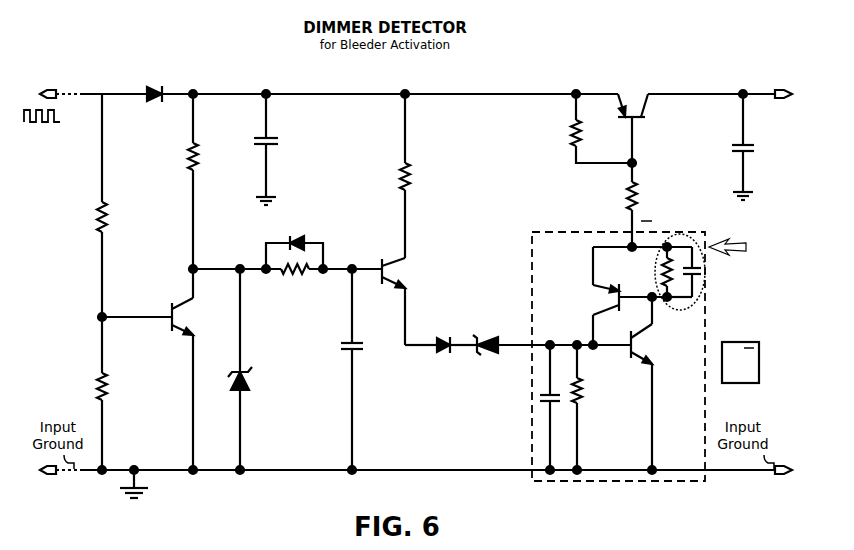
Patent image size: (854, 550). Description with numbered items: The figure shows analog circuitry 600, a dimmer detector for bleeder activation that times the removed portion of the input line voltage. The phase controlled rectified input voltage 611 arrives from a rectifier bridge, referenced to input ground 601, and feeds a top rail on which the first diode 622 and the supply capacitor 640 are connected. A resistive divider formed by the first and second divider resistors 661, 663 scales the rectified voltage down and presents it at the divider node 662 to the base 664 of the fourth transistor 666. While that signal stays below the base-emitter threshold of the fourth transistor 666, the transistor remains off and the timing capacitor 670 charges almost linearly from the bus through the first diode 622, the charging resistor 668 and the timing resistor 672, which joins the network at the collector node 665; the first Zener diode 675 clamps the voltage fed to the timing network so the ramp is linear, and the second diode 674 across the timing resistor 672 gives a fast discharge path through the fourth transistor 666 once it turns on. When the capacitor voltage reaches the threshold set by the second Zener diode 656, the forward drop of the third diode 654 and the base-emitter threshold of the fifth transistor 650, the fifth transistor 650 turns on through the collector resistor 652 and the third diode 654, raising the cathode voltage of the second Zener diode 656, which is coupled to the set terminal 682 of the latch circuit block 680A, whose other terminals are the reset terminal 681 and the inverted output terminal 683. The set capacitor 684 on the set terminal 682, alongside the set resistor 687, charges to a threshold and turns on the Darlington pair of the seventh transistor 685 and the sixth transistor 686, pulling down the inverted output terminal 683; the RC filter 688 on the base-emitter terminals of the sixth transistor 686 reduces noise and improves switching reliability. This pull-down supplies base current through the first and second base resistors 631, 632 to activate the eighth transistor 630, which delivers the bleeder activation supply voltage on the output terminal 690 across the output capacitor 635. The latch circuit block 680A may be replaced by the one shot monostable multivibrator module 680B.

The analog circuitry 600 is at (427, 248).
The input ground 601 is at (118, 491).
The rectified input voltage VRECT 611 is at (86, 88).
The diode D1 622 is at (151, 84).
The transistor Q8 630 is at (626, 96).
The resistor 631 is at (568, 134).
The resistor 632 is at (658, 185).
The capacitor 635 is at (752, 140).
The supply capacitor Csupply 640 is at (286, 140).
The transistor Q5 650 is at (403, 272).
The resistor 652 is at (430, 163).
The diode D3 654 is at (445, 337).
The Zener diode VR2 656 is at (488, 334).
The resistor 661 is at (134, 205).
The node 662 is at (122, 305).
The resistor 663 is at (131, 379).
The base of transistor Q4 664 is at (176, 293).
The node 665 is at (210, 262).
The transistor Q4 666 is at (199, 340).
The resistor 668 is at (221, 148).
The timing capacitor Ctiming 670 is at (360, 354).
The timing resistor Rtiming 672 is at (294, 278).
The diode D2 674 is at (298, 237).
The Zener diode VR1 675 is at (248, 390).
The latch circuit block 680A is at (710, 247).
The one shot monostable multivibrator module 680B is at (780, 359).
The terminal R 681 is at (517, 472).
The terminal S 682 is at (520, 360).
The terminal Q-bar 683 is at (624, 227).
The capacitor 684 is at (542, 412).
The transistor Q7 685 is at (654, 362).
The transistor Q6 686 is at (602, 289).
The resistor 687 is at (602, 393).
The RC filter 688 is at (676, 238).
The terminal for bleeder activation supply voltage 690 is at (786, 84).